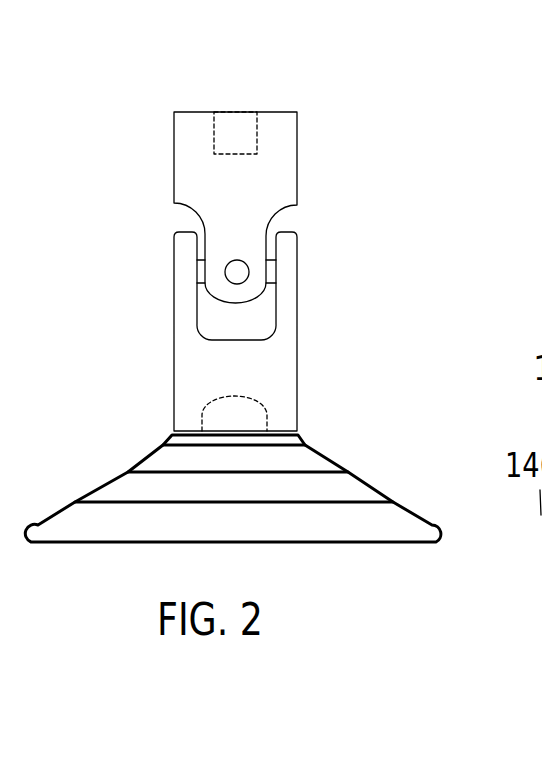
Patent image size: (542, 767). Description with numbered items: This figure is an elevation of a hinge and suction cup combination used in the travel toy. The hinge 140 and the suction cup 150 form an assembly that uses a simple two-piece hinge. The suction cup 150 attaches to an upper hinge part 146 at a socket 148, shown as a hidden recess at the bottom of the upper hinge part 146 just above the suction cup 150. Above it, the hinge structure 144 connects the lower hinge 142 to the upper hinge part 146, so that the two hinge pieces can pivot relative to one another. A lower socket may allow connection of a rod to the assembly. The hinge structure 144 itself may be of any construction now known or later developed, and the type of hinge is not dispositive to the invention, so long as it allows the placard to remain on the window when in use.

The hinge 140 is at (377, 174).
The lower hinge 142 is at (222, 178).
The hinge structure 144 is at (200, 265).
The upper hinge part 146 is at (263, 380).
The socket 148 is at (202, 410).
The suction cup 150 is at (345, 520).